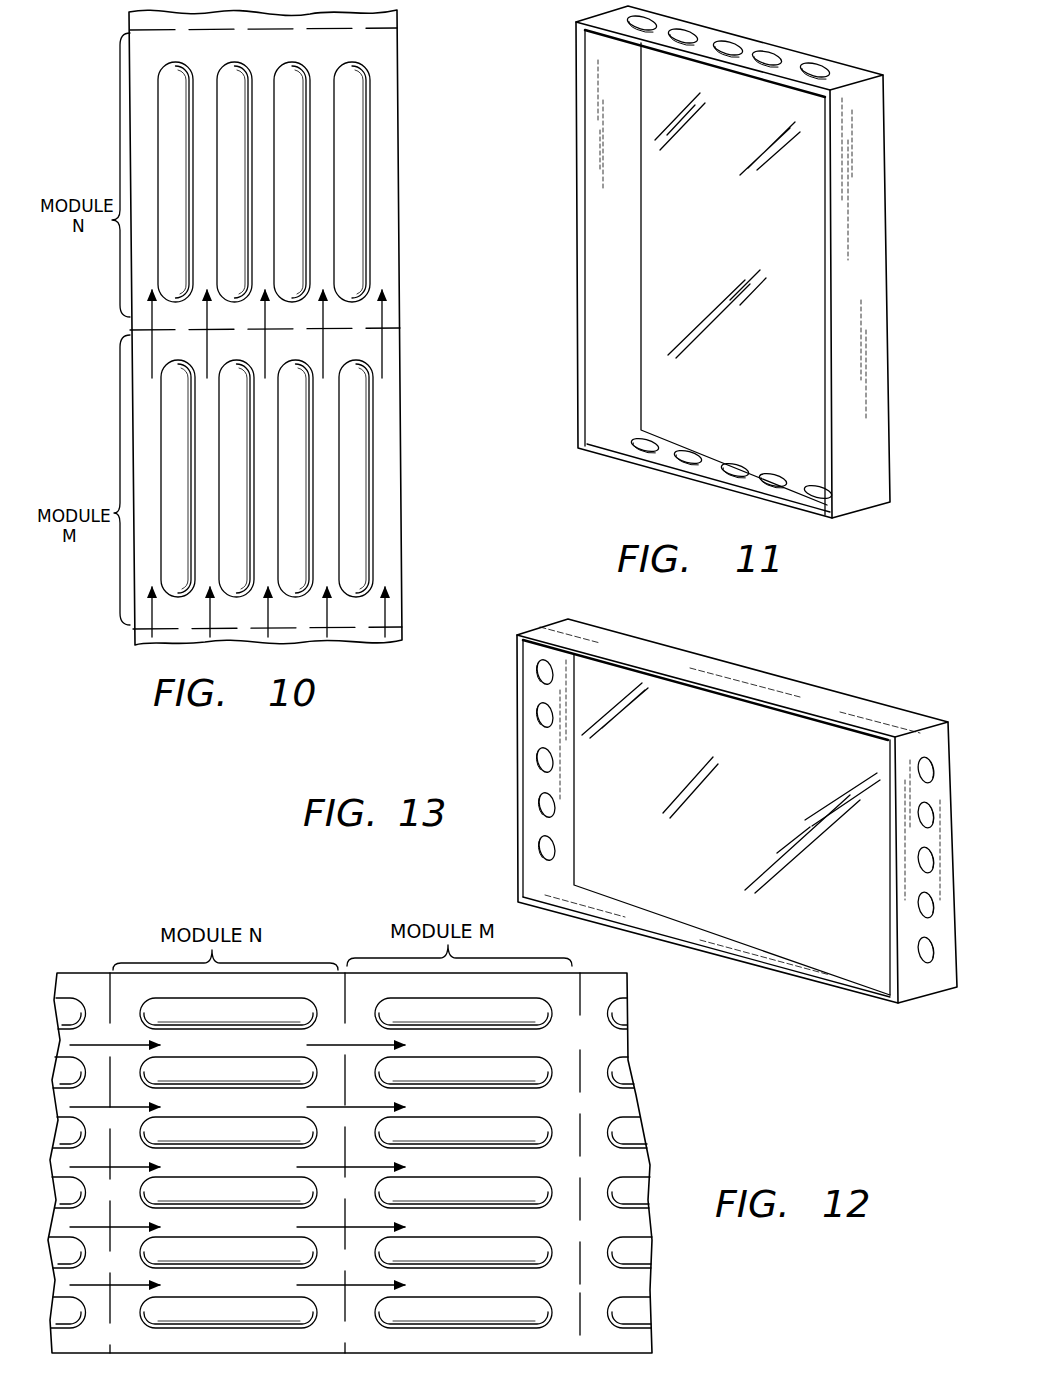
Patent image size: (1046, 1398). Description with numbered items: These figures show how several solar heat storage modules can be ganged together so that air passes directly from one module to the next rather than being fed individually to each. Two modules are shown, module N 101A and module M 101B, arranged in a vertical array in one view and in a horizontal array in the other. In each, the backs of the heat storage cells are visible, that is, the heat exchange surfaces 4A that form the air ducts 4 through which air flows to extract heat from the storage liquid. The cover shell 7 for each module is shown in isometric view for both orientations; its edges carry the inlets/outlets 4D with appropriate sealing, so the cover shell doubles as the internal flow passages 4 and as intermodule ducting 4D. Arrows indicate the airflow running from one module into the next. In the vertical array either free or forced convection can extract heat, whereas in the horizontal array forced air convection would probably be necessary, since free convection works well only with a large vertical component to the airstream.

In FIG. 10, the air ducts 4 is at (142, 180).
In FIG. 12, the air ducts 4 is at (513, 1040).
In FIG. 10, the heat exchange surfaces 4A is at (283, 122).
In FIG. 12, the heat exchange surfaces 4A is at (405, 1005).
In FIG. 10, the inlet/outlet 4D is at (151, 330).
In FIG. 11, the inlet/outlet 4D is at (732, 50).
In FIG. 13, the inlet/outlet 4D is at (533, 730).
In FIG. 12, the inlet/outlet 4D is at (110, 1037).
In FIG. 11, the cover shell 7 is at (863, 493).
In FIG. 13, the cover shell 7 is at (518, 868).
In FIG. 10, the module N 101A is at (397, 236).
In FIG. 12, the module N 101A is at (241, 1178).
In FIG. 10, the module M 101B is at (132, 457).
In FIG. 12, the module M 101B is at (523, 1352).